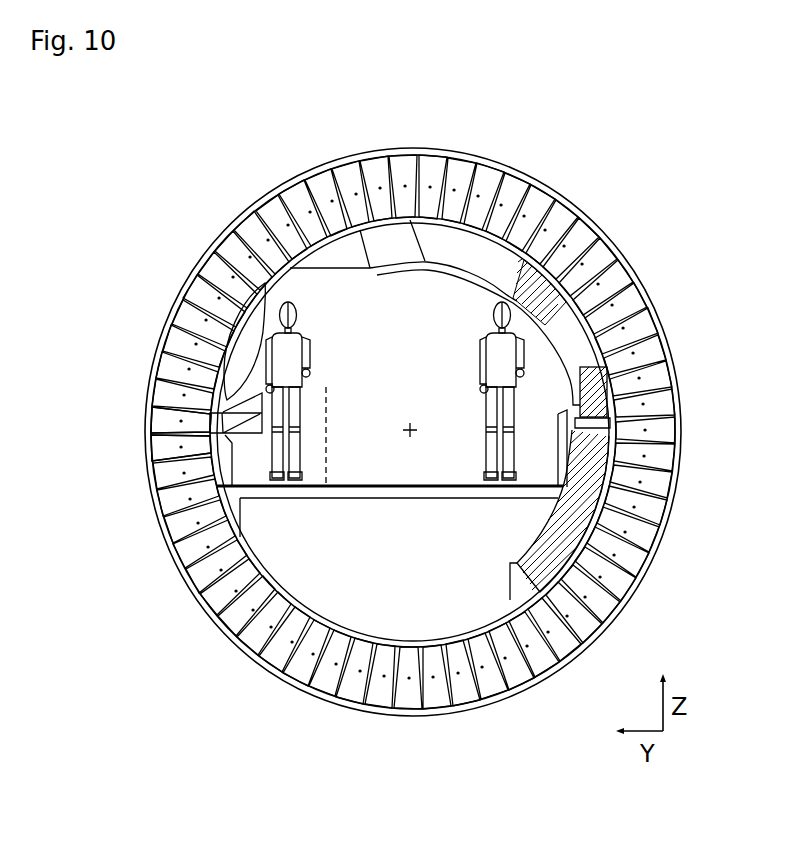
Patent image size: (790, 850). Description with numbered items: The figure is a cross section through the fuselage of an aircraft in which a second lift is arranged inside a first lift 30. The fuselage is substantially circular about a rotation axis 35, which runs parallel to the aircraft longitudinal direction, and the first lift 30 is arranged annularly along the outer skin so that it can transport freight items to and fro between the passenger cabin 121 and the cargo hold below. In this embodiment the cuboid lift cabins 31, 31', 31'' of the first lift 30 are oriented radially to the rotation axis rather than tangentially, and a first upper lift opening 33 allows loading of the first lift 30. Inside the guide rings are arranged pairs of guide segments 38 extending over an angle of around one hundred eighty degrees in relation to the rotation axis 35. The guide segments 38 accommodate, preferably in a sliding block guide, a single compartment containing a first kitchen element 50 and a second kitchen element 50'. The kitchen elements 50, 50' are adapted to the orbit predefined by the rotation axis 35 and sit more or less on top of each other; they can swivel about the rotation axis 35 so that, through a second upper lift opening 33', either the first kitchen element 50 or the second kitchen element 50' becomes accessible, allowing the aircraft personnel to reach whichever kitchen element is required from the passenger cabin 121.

The first lift 30 is at (245, 260).
The first upper lift opening 33 is at (303, 285).
The second upper lift opening 33' is at (383, 225).
The lift cabin 31 is at (142, 384).
The lift cabin 31' is at (119, 424).
The lift cabin 31'' is at (130, 467).
The passenger cabin 121 is at (312, 497).
The rotation axis 35 is at (400, 430).
The first kitchen element 50 is at (664, 422).
The second kitchen element 50' is at (639, 511).
The guide segments 38 is at (520, 598).